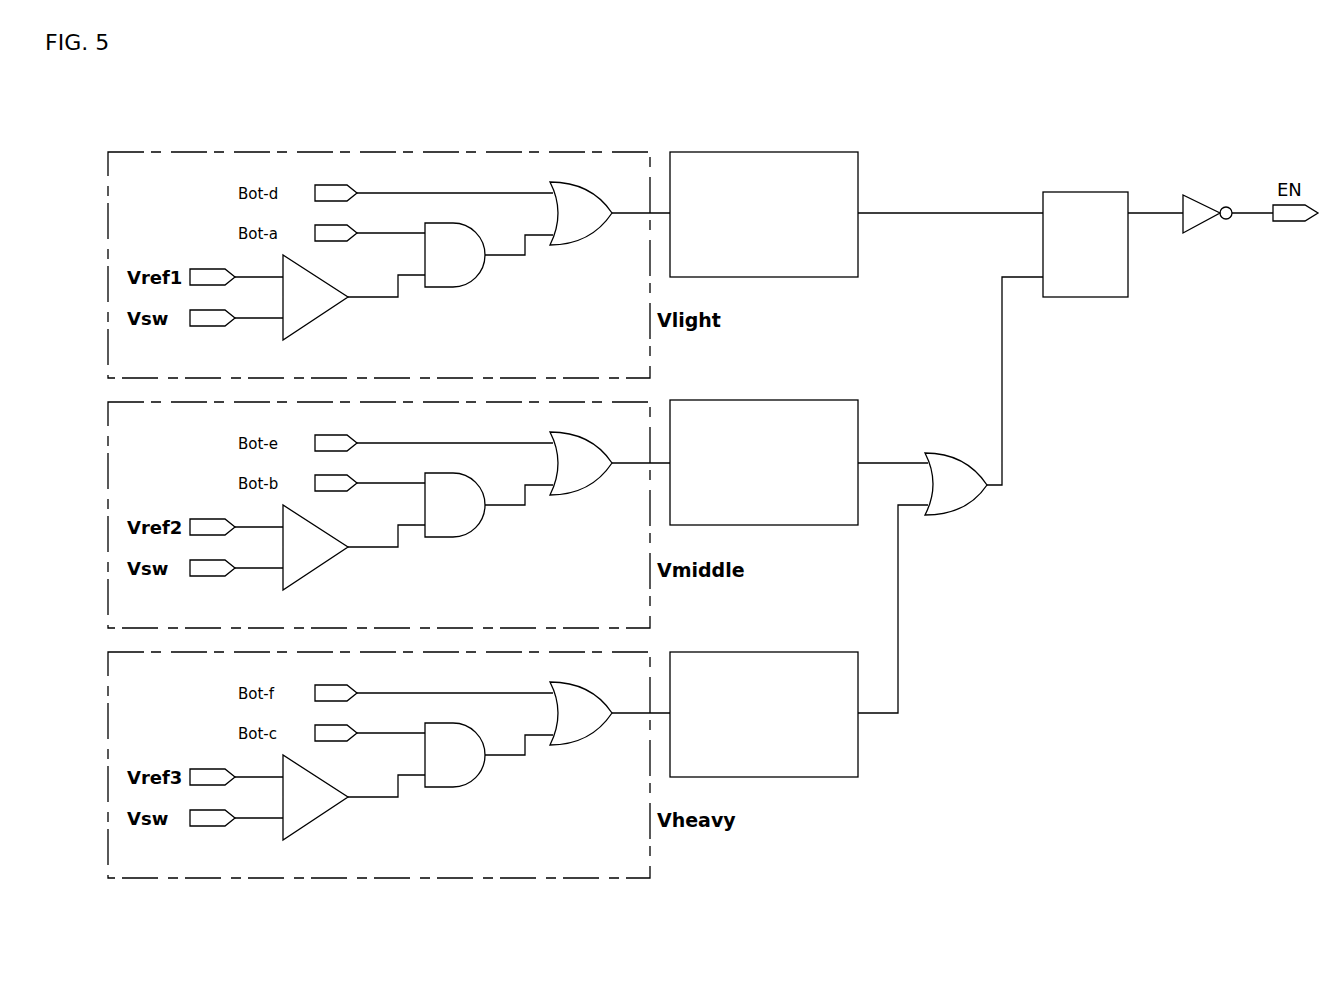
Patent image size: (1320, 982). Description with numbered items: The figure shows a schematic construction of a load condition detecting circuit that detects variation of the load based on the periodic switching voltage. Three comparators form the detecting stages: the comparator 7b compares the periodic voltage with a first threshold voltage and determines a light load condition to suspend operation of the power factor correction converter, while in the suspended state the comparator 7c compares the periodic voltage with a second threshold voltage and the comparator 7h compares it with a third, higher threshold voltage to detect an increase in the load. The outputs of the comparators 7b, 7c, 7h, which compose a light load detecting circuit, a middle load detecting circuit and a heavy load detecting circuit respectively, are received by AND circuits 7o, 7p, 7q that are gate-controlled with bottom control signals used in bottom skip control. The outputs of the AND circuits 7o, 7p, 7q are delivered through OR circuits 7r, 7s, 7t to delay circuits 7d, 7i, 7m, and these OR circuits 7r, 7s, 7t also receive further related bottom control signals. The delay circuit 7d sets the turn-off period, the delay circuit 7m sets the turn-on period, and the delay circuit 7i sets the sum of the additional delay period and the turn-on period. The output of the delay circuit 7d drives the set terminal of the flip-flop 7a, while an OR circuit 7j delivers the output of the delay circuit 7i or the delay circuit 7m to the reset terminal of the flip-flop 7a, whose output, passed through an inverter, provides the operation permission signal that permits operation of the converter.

The flip-flop 7a is at (1095, 192).
The comparator 7b is at (318, 322).
The comparator 7c is at (333, 558).
The comparator 7h is at (334, 808).
The AND circuit 7o is at (440, 288).
The AND circuit 7p is at (455, 537).
The AND circuit 7q is at (455, 787).
The OR circuit 7r is at (562, 246).
The OR circuit 7s is at (581, 496).
The OR circuit 7t is at (581, 746).
The delay circuit 7d is at (852, 201).
The delay circuit 7i is at (800, 400).
The delay circuit 7m is at (850, 747).
The OR circuit 7j is at (957, 514).